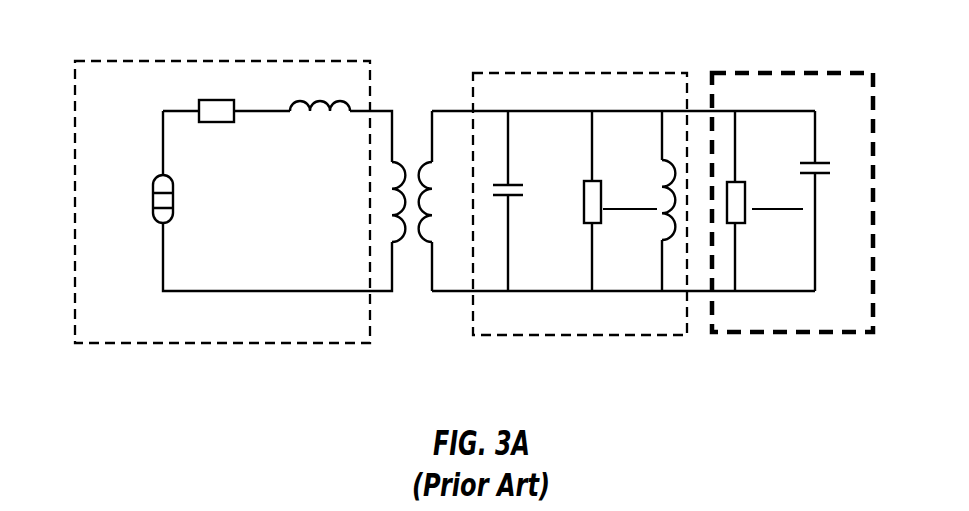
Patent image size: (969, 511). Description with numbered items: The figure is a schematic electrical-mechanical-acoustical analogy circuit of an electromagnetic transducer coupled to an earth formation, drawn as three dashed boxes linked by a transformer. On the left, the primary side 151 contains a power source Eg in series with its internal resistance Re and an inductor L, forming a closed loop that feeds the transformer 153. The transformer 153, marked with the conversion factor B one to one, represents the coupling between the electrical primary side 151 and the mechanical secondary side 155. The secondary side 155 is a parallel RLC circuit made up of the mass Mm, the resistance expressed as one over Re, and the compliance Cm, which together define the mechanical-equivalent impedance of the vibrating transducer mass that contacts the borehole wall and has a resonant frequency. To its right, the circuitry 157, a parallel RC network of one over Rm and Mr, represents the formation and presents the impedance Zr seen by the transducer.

The primary side 151 is at (112, 60).
The transformer 153 is at (412, 110).
The secondary side 155 is at (530, 54).
The circuitry 157 is at (792, 72).